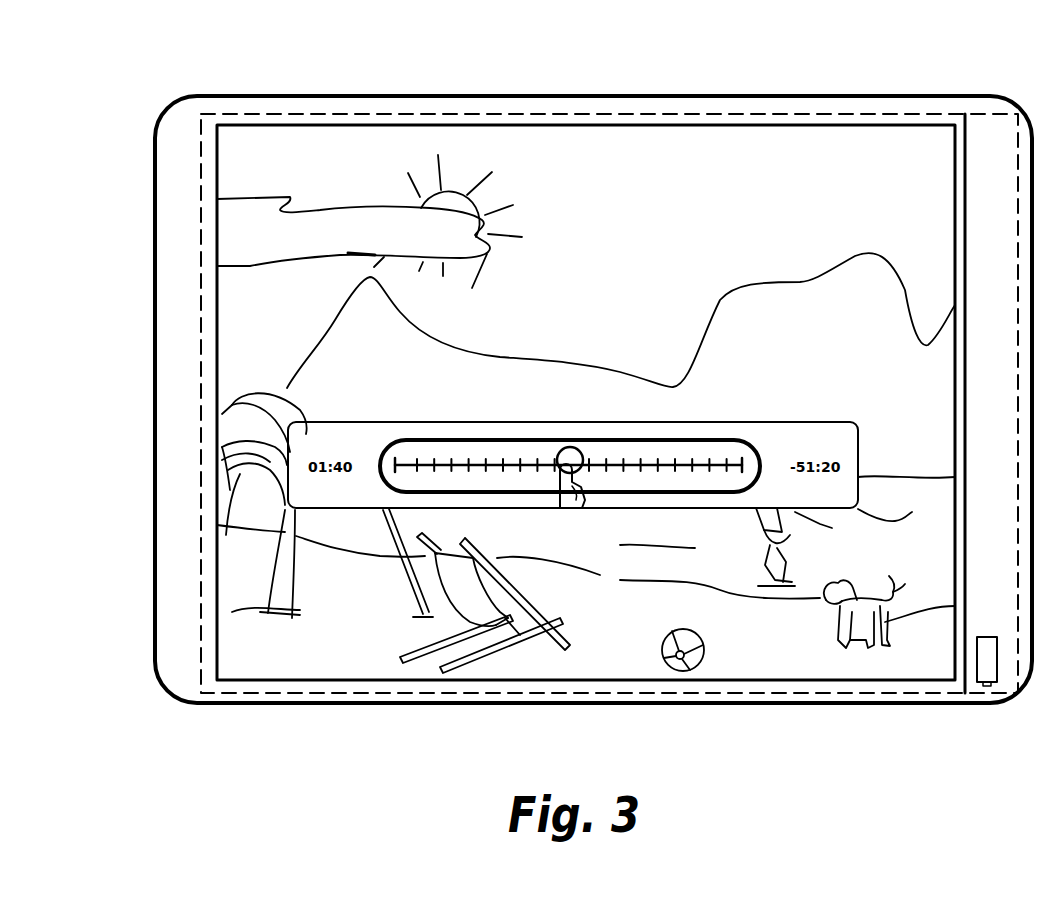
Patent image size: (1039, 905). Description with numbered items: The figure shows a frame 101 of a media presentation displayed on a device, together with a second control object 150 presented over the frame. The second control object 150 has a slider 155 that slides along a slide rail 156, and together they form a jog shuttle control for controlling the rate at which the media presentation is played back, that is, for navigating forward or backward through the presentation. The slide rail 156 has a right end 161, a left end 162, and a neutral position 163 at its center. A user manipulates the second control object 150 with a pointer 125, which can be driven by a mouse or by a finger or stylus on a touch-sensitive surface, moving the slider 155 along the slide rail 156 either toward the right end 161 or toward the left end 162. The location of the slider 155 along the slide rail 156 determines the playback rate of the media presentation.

The frame 101 is at (828, 123).
The pointer 125 is at (565, 509).
The second control object 150 is at (443, 440).
The slider 155 is at (572, 447).
The slide rail 156 is at (487, 462).
The right end 161 is at (742, 458).
The left end 162 is at (398, 462).
The neutral position 163 is at (592, 457).